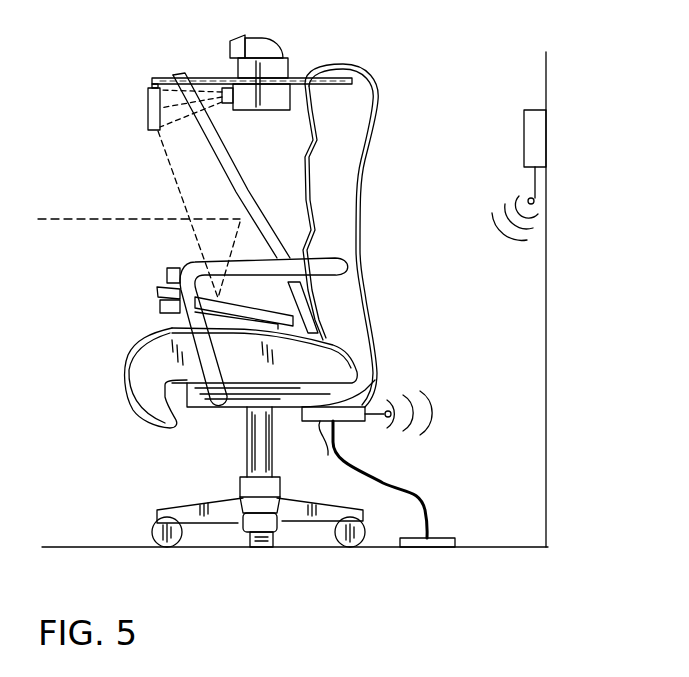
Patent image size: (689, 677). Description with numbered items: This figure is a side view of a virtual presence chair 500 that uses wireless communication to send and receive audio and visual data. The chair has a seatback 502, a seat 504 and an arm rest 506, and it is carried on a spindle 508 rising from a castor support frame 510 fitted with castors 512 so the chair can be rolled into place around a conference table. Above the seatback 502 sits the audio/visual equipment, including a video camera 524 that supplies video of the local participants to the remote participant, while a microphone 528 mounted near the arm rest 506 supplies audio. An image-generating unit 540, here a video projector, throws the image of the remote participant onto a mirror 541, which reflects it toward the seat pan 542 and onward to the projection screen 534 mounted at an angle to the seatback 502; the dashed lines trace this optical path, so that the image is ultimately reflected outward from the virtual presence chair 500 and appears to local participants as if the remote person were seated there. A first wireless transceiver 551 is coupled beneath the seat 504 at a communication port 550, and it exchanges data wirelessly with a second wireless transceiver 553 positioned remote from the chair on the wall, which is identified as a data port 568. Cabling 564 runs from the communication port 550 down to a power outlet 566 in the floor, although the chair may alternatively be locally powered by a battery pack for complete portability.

The virtual presence chair 500 is at (401, 77).
The seatback 502 is at (353, 158).
The seat 504 is at (130, 390).
The arm rest 506 is at (200, 262).
The spindle 508 is at (247, 435).
The castor support frame 510 is at (182, 507).
The castors 512 is at (150, 532).
The video camera 524 is at (230, 52).
The microphone 528 is at (167, 280).
The projection screen 534 is at (233, 167).
The image-generating unit 540 is at (295, 94).
The mirror 541 is at (148, 108).
The seat pan 542 is at (157, 292).
The communication port 550 is at (385, 432).
The first wireless transceiver 551 is at (321, 448).
The second wireless transceiver 553 is at (524, 147).
The cabling 564 is at (436, 500).
The power outlet 566 is at (454, 559).
The data port 568 is at (556, 122).